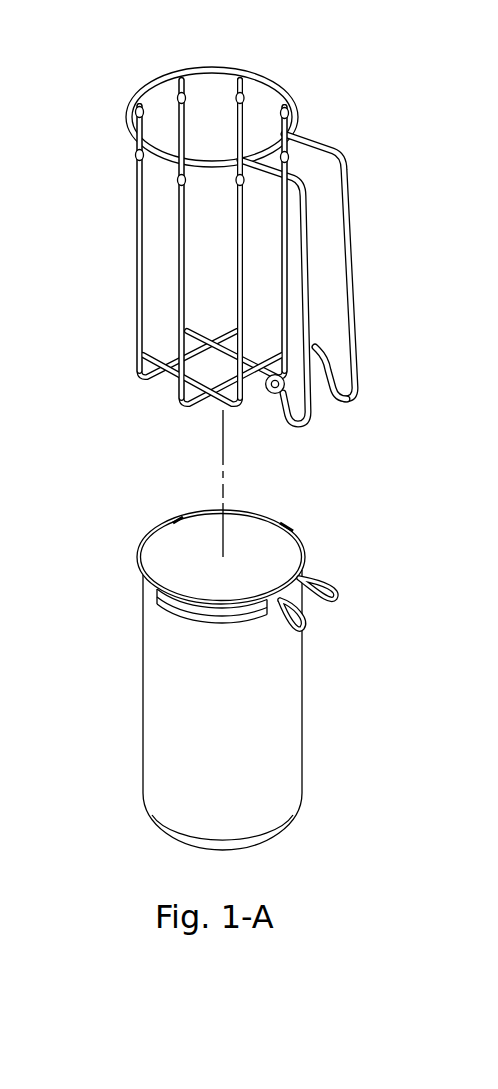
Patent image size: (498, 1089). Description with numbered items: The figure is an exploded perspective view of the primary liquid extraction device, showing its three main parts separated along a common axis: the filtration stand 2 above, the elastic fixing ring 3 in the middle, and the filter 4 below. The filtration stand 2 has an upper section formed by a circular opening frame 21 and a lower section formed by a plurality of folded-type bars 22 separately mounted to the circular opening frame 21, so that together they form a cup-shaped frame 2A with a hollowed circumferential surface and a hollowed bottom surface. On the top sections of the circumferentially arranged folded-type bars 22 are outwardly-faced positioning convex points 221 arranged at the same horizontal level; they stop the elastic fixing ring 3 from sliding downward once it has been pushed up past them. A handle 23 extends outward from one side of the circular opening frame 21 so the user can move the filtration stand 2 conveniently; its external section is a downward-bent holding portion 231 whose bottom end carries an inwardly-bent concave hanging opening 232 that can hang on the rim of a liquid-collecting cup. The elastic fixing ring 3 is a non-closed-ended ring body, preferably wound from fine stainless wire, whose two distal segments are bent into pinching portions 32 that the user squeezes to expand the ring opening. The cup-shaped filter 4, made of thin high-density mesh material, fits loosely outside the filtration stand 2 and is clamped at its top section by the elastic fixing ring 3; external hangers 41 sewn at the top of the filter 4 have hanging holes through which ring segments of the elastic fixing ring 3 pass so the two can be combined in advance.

The filtration stand 2 is at (241, 260).
The cup-shaped frame 2A is at (128, 310).
The circular opening frame 21 is at (160, 83).
The folded-type bars 22 is at (137, 192).
The positioning convex points 221 is at (131, 160).
The handle 23 is at (338, 254).
The holding portion 231 is at (358, 283).
The hanging opening 232 is at (273, 397).
The elastic fixing ring 3 is at (270, 558).
The pinching portions 32 is at (332, 588).
The filter 4 is at (188, 710).
The external hangers 41 is at (160, 605).